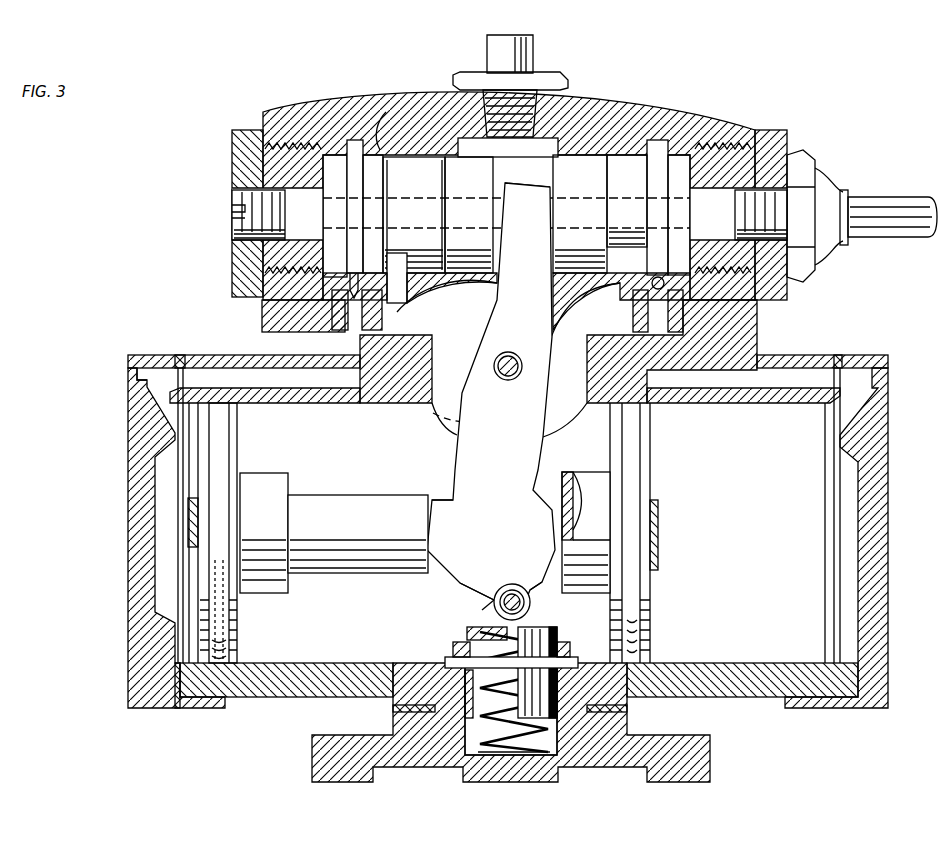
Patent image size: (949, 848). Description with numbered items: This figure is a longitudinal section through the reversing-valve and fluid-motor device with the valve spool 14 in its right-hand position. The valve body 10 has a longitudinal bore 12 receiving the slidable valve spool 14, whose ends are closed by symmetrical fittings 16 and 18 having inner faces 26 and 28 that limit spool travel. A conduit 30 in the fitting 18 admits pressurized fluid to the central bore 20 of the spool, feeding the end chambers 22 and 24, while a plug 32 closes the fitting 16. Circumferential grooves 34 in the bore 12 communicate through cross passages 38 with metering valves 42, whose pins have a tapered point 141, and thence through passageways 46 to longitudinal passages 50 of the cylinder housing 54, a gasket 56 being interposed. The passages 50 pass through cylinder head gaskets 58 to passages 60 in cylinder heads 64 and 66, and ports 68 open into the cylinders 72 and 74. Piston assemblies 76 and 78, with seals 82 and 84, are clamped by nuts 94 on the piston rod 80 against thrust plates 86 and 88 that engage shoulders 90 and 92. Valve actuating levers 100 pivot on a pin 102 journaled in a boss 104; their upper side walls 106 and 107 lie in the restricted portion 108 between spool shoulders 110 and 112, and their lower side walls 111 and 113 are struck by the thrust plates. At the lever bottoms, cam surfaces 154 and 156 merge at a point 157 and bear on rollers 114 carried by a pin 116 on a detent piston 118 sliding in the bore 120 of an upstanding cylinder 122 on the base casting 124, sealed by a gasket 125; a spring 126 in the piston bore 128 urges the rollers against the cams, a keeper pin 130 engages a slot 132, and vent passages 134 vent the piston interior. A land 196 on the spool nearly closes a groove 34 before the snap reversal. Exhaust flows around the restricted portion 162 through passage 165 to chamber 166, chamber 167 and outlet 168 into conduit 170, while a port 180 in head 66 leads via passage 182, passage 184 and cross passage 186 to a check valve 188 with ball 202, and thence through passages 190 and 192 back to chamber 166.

The valve body 10 is at (614, 97).
The longitudinal bore 12 is at (624, 155).
The valve spool 14 is at (445, 150).
The fitting 16 is at (232, 165).
The fitting 18 is at (787, 140).
The central longitudinally extending bore 20 is at (650, 197).
The chamber 22 is at (338, 155).
The chamber 24 is at (692, 182).
The inner face 26 is at (318, 133).
The inner face 28 is at (703, 262).
The conduit 30 is at (830, 176).
The plug 32 is at (234, 222).
The circumferential groove 34 is at (355, 140).
The cross passage 38 is at (323, 256).
The metering valve 42 is at (297, 332).
The passageway 46 is at (386, 386).
The longitudinal passage 50 is at (330, 402).
The cylinder housing 54 is at (765, 362).
The gasket 56 is at (758, 336).
The cylinder head gasket 58 is at (180, 358).
The passage 60 is at (165, 355).
The cylinder head 64 is at (128, 359).
The cylinder head 66 is at (888, 373).
The port 68 is at (170, 416).
The cylinder 72 is at (280, 652).
The cylinder 74 is at (740, 692).
The piston assembly 76 is at (280, 629).
The piston assembly 78 is at (650, 461).
The piston rod 80 is at (368, 476).
The seal 82 is at (272, 446).
The seal 84 is at (590, 470).
The thrust plate 86 is at (290, 476).
The thrust plate 88 is at (570, 472).
The shoulder 90 is at (560, 493).
The shoulder 92 is at (358, 539).
The nut 94 is at (188, 521).
The valve actuating lever 100 is at (462, 440).
The axle or pin 102 is at (513, 352).
The projecting boss 104 is at (495, 392).
The side wall 106 is at (500, 205).
The side wall 107 is at (554, 206).
The restricted portion 108 is at (530, 172).
The shoulder 110 is at (493, 165).
The side wall 111 is at (438, 490).
The shoulder 112 is at (550, 150).
The side wall 113 is at (590, 534).
The roller 114 is at (529, 608).
The pin 116 is at (524, 600).
The detent piston 118 is at (537, 672).
The bore 120 is at (560, 726).
The upstanding cylinder 122 is at (580, 686).
The base casting 124 is at (712, 753).
The gasket 125 is at (640, 711).
The spring 126 is at (477, 735).
The bore 128 is at (467, 706).
The keeper pin 130 is at (455, 664).
The slot 132 is at (455, 650).
The vent passage 134 is at (470, 632).
The tapered point 141 is at (392, 262).
The cam surface 154 is at (470, 588).
The cam surface 156 is at (520, 563).
The point 157 is at (482, 608).
The restricted portion 162 is at (432, 170).
The passage 165 is at (392, 335).
The chamber 166 is at (448, 355).
The chamber 167 is at (480, 300).
The outlet 168 is at (565, 73).
The conduit 170 is at (486, 57).
The port 180 is at (842, 420).
The passage 182 is at (845, 370).
The passage 184 is at (740, 404).
The cross passage 186 is at (665, 345).
The check valve 188 is at (683, 318).
The passage 190 is at (666, 283).
The passage 192 is at (612, 253).
The land 196 is at (395, 130).
The ball 202 is at (626, 235).